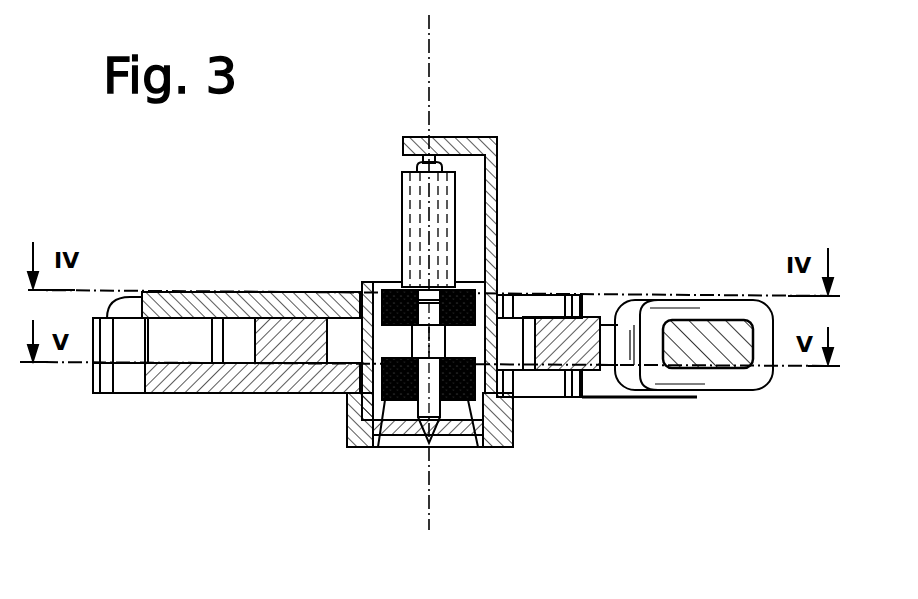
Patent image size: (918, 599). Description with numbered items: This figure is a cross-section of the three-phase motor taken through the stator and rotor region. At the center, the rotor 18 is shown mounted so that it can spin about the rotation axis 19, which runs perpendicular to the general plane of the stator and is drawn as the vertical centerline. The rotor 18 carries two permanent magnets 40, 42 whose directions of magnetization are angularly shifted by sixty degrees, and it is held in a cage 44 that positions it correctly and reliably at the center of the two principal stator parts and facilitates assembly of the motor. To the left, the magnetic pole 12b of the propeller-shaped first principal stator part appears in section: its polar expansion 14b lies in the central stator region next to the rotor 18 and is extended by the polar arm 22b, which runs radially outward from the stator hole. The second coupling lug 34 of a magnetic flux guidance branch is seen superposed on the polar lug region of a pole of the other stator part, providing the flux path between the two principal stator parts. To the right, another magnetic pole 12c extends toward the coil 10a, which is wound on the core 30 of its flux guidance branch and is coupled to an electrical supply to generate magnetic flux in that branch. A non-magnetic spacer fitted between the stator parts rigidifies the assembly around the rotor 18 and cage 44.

The coil 10a is at (753, 373).
The magnetic pole 12b is at (187, 293).
The magnetic pole 12c is at (540, 305).
The polar expansion 14b is at (337, 288).
The rotor 18 is at (381, 212).
The rotation axis 19 is at (428, 50).
The polar arm 22b is at (232, 278).
The core 30 is at (707, 337).
The second coupling lug 34 is at (170, 340).
The permanent magnet 40 is at (458, 400).
The permanent magnet 42 is at (397, 392).
The cage 44 is at (497, 223).